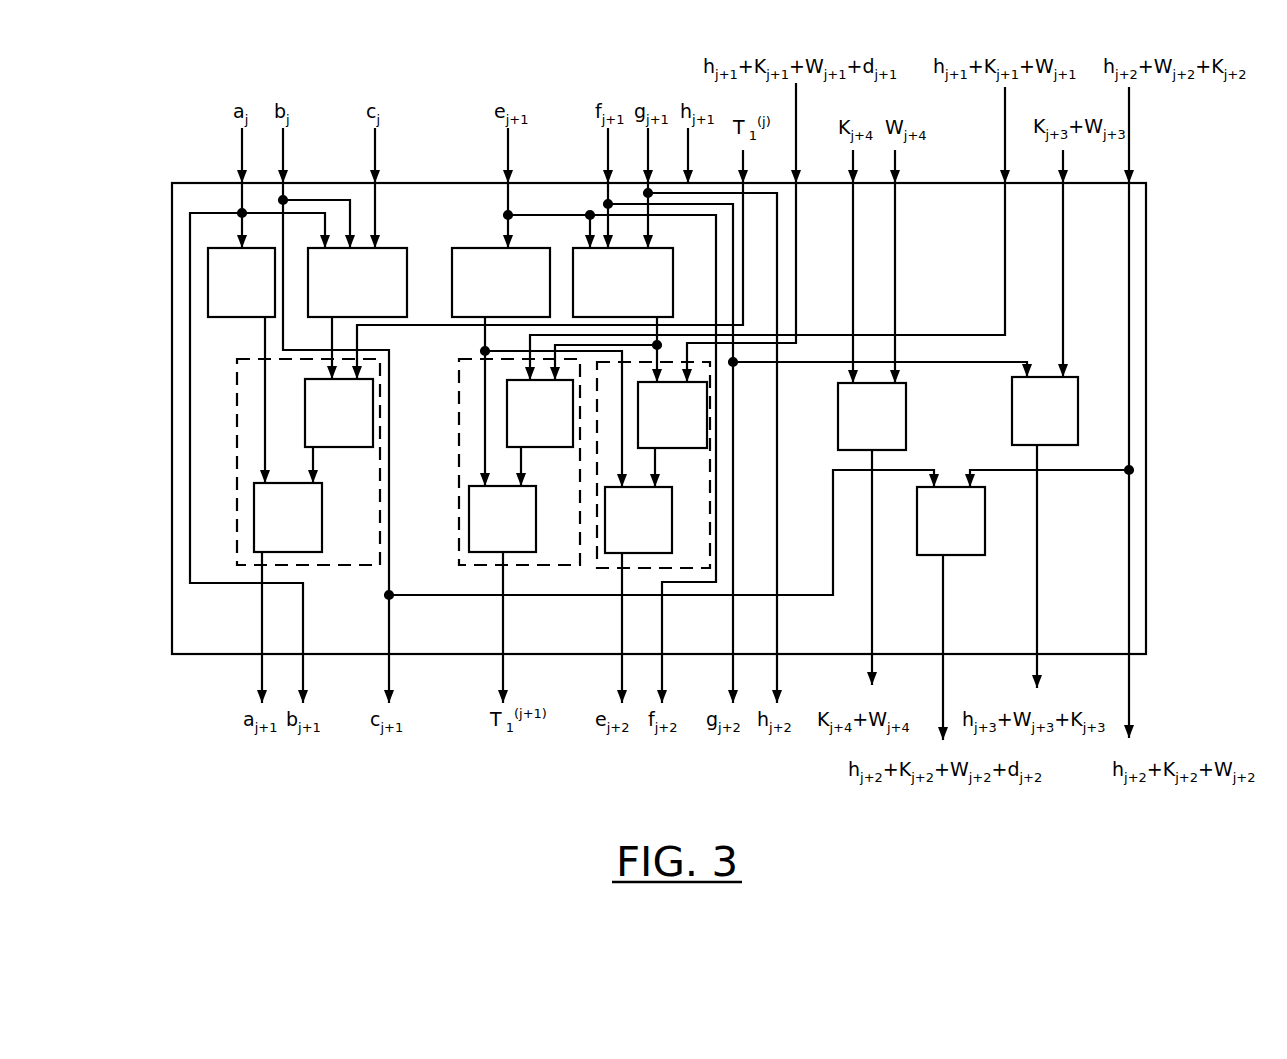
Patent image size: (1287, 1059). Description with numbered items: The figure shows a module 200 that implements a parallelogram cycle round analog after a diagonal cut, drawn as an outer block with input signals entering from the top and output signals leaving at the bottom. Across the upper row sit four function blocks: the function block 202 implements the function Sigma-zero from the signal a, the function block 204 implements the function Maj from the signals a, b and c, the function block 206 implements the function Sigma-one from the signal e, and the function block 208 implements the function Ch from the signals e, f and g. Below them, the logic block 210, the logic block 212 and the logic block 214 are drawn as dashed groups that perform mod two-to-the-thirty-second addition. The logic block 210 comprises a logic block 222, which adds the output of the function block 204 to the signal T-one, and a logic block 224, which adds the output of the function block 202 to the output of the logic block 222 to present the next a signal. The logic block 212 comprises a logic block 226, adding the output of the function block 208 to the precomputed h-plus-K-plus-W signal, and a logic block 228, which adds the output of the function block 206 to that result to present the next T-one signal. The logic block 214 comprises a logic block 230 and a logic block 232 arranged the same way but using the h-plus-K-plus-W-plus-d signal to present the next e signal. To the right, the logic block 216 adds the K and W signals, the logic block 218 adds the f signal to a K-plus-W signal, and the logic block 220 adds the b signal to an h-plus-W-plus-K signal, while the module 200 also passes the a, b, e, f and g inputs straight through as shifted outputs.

The module 200 is at (215, 183).
The function block 202 is at (255, 318).
The function block 204 is at (381, 248).
The function block 206 is at (506, 248).
The function block 208 is at (581, 248).
The logic block 210 is at (237, 426).
The logic block 212 is at (459, 426).
The logic block 214 is at (607, 570).
The logic block 216 is at (838, 424).
The logic block 218 is at (1012, 416).
The logic block 220 is at (917, 532).
The logic block 222 is at (322, 448).
The logic block 224 is at (322, 527).
The logic block 226 is at (524, 448).
The logic block 228 is at (536, 527).
The logic block 230 is at (658, 448).
The logic block 232 is at (672, 540).